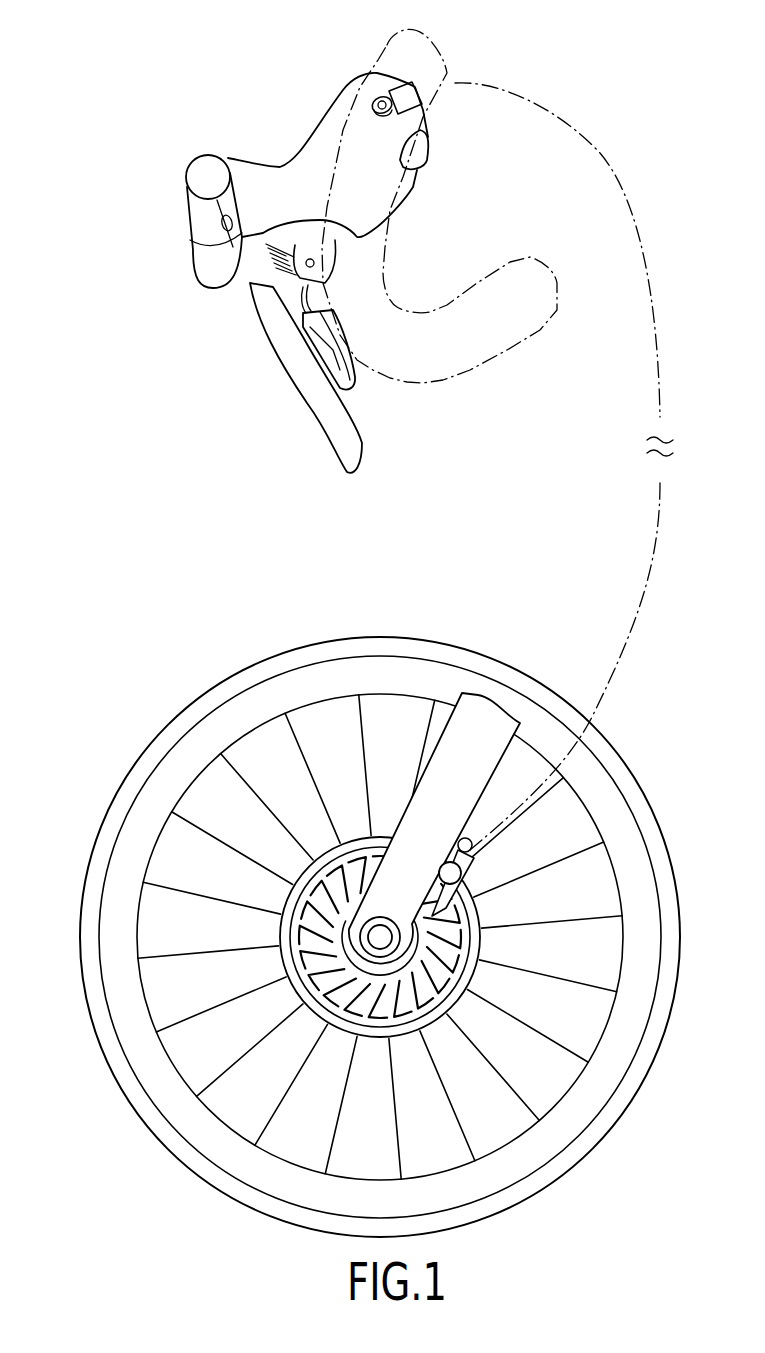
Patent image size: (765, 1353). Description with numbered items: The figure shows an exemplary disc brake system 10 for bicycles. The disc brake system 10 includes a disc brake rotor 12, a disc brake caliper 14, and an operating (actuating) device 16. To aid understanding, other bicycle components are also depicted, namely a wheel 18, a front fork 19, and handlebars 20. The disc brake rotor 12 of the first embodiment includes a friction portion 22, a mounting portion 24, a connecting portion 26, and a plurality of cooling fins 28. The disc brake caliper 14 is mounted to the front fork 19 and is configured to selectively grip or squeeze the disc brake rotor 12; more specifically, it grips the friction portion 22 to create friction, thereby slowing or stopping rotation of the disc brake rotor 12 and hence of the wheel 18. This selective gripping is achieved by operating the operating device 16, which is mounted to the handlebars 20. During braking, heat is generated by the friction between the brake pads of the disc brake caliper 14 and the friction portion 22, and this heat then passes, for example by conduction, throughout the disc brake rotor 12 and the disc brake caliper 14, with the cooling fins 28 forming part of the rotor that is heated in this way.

The disc brake system 10 is at (89, 20).
The disc brake rotor 12 is at (393, 966).
The disc brake caliper 14 is at (466, 869).
The operating device 16 is at (188, 160).
The wheel 18 is at (178, 692).
The front fork 19 is at (445, 750).
The handlebars 20 is at (412, 300).
The friction portion 22 is at (405, 1032).
The mounting portion 24 is at (367, 967).
The connecting portion 26 is at (344, 945).
The cooling fins 28 is at (300, 930).